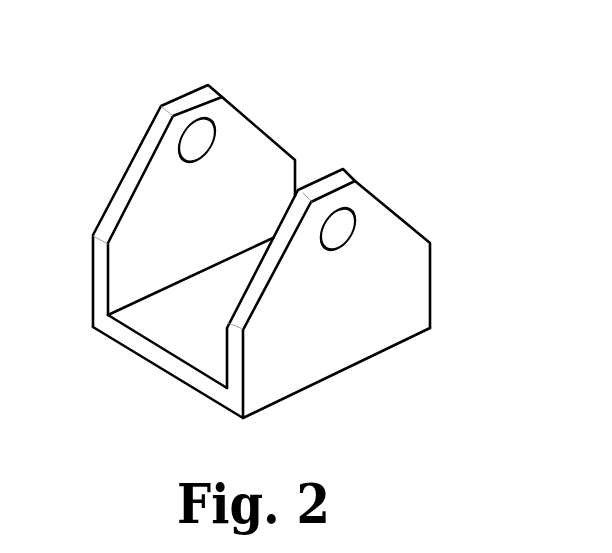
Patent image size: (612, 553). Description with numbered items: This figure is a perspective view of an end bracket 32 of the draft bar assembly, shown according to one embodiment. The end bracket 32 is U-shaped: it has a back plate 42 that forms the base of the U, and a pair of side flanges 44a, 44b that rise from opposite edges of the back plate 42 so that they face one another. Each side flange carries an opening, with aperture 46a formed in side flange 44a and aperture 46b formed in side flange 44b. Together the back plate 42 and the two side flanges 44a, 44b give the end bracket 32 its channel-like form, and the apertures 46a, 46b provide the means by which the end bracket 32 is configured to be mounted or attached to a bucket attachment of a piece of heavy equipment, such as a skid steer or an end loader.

The end bracket 32 is at (348, 82).
The back plate 42 is at (178, 347).
The side flange 44a is at (402, 243).
The side flange 44b is at (148, 200).
The aperture 46a is at (332, 238).
The aperture 46b is at (192, 133).